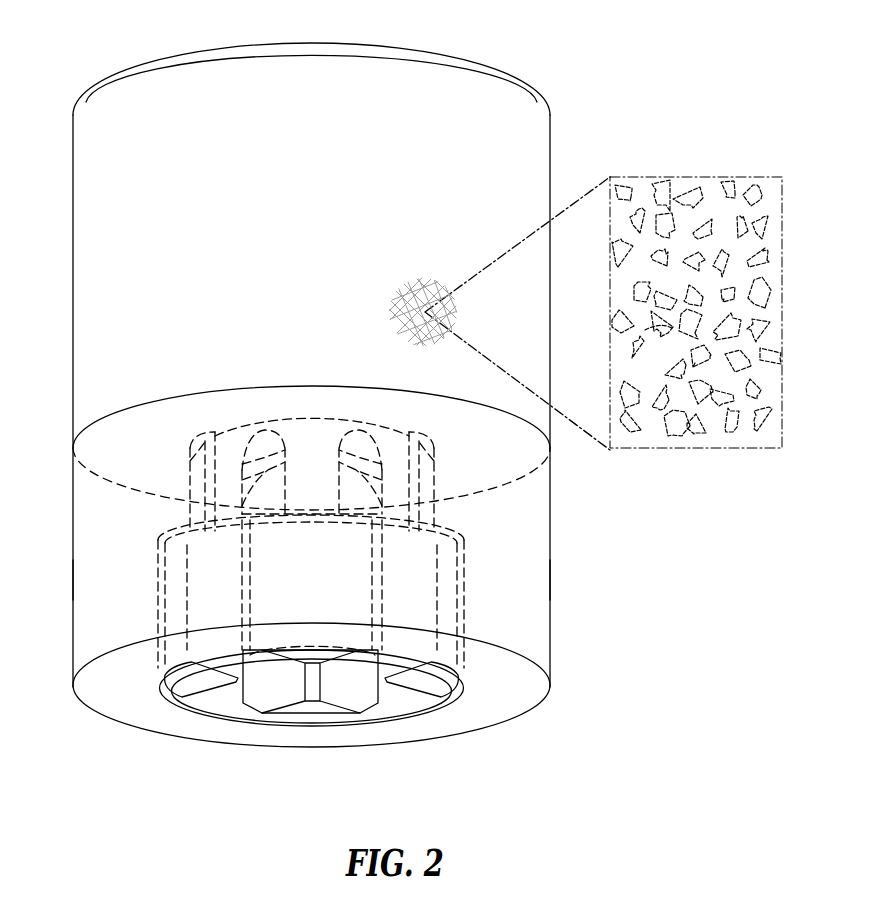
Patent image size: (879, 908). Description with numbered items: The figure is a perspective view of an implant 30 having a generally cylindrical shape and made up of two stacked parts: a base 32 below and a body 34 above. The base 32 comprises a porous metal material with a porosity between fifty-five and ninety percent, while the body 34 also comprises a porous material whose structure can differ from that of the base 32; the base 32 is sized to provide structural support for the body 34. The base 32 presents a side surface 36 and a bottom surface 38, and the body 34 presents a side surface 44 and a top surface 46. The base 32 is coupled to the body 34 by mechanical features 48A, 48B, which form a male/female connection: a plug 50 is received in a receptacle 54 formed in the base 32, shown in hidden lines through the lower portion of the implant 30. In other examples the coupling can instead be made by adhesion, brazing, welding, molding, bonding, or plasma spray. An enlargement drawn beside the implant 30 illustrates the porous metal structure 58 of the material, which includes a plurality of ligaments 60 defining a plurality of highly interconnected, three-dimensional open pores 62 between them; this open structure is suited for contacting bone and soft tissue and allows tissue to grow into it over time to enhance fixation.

The implant 30 is at (73, 51).
The base 32 is at (566, 569).
The body 34 is at (578, 144).
The side surface 36 is at (73, 562).
The bottom surface 38 is at (524, 704).
The side surface 44 is at (73, 247).
The top surface 46 is at (312, 44).
The mechanical feature 48A is at (304, 708).
The mechanical feature 48B is at (330, 752).
The plug 50 is at (356, 693).
The receptacle 54 is at (368, 730).
The porous metal structure 58 is at (735, 158).
The ligaments 60 is at (762, 256).
The pores 62 is at (640, 335).